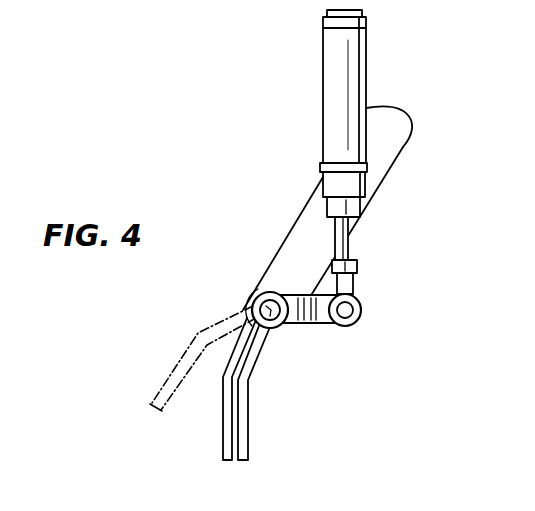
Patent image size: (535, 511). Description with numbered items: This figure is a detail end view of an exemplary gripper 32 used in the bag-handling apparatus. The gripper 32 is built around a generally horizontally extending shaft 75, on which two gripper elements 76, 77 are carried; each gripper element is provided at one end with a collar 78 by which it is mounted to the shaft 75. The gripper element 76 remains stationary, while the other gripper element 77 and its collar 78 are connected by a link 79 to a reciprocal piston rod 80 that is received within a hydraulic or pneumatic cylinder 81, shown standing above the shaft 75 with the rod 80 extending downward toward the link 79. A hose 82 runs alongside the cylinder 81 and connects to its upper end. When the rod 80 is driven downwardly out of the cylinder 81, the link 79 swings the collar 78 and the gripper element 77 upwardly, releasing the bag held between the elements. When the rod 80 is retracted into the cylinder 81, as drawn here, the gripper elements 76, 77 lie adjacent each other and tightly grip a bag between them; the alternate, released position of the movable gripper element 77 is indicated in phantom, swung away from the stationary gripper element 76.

The gripper 32 is at (237, 166).
The shaft 75 is at (258, 294).
The gripper element 76 is at (249, 420).
The gripper element 77 is at (158, 402).
The collar 78 is at (283, 330).
The link 79 is at (361, 306).
The piston rod 80 is at (352, 246).
The cylinder 81 is at (361, 73).
The hose 82 is at (405, 152).